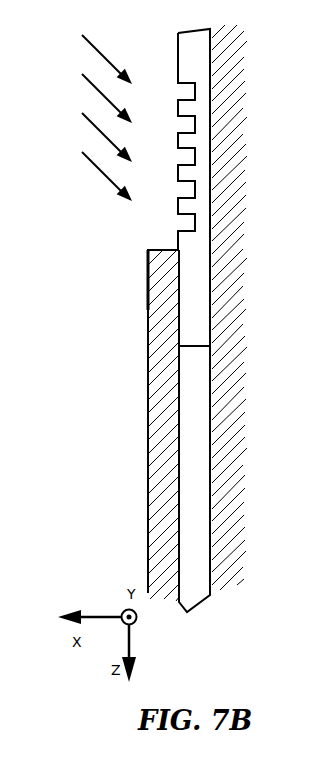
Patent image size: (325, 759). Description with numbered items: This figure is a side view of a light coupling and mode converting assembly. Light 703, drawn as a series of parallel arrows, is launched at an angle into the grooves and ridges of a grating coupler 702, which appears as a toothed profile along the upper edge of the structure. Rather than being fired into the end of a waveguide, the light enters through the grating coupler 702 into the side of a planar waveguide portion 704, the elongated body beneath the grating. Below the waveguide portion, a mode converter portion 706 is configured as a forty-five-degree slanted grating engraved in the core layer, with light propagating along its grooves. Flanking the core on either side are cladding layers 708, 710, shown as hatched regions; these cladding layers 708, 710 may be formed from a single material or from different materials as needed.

The grating coupler 702 is at (182, 107).
The light 703 is at (84, 196).
The planar waveguide portion 704 is at (204, 241).
The mode converter portion 706 is at (150, 502).
The cladding layer 708 is at (172, 429).
The cladding layer 710 is at (236, 429).